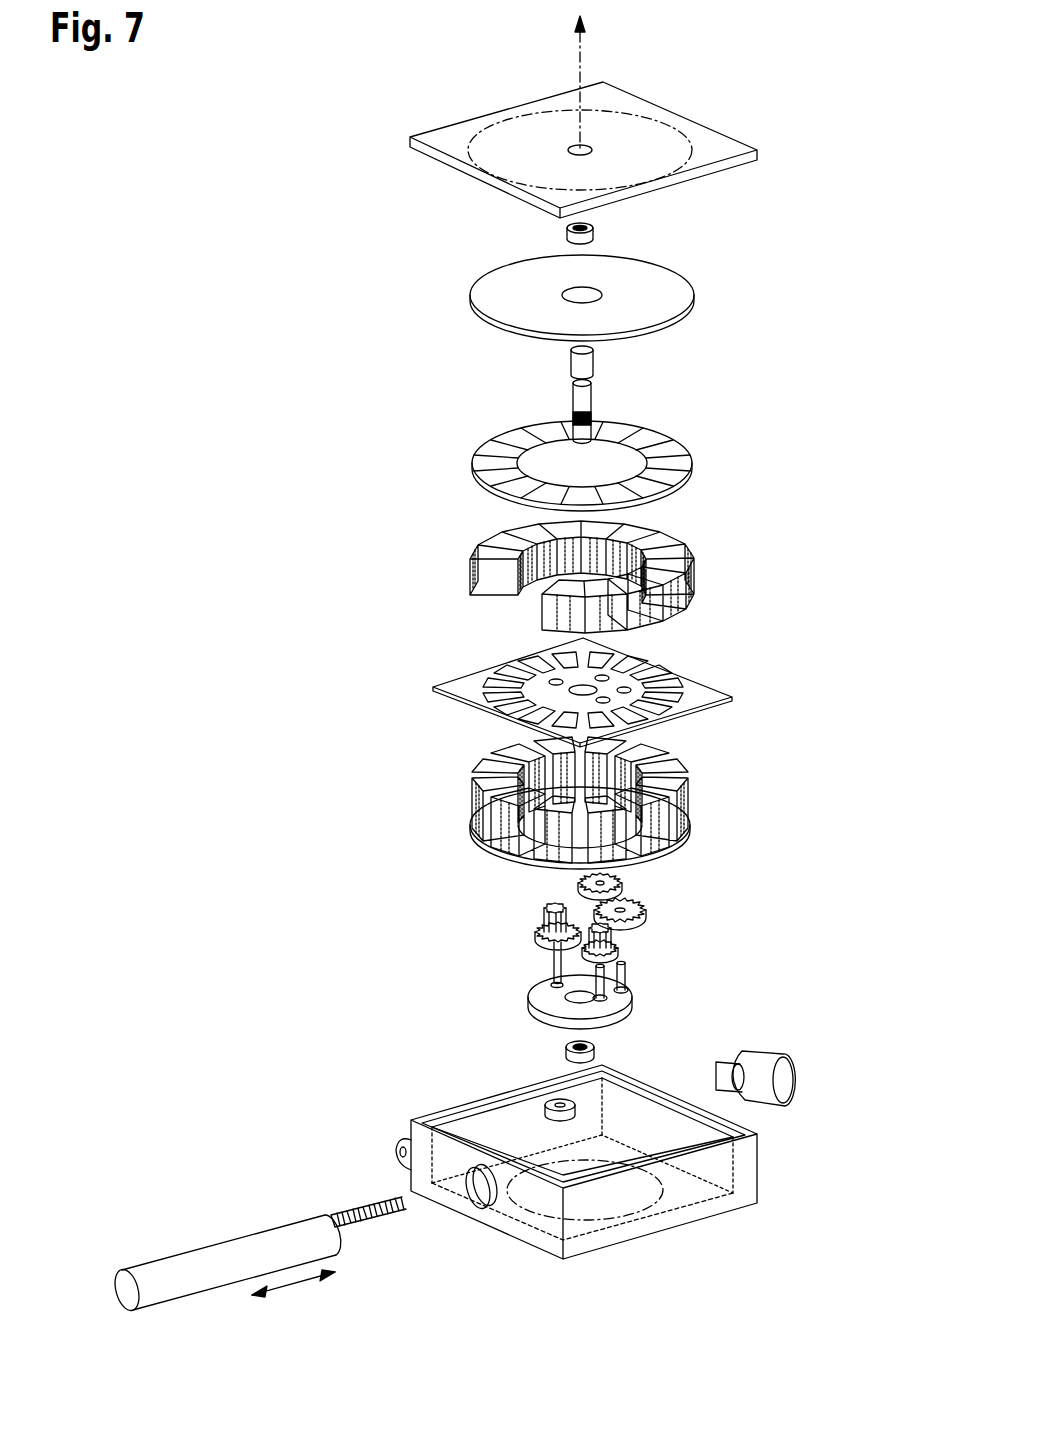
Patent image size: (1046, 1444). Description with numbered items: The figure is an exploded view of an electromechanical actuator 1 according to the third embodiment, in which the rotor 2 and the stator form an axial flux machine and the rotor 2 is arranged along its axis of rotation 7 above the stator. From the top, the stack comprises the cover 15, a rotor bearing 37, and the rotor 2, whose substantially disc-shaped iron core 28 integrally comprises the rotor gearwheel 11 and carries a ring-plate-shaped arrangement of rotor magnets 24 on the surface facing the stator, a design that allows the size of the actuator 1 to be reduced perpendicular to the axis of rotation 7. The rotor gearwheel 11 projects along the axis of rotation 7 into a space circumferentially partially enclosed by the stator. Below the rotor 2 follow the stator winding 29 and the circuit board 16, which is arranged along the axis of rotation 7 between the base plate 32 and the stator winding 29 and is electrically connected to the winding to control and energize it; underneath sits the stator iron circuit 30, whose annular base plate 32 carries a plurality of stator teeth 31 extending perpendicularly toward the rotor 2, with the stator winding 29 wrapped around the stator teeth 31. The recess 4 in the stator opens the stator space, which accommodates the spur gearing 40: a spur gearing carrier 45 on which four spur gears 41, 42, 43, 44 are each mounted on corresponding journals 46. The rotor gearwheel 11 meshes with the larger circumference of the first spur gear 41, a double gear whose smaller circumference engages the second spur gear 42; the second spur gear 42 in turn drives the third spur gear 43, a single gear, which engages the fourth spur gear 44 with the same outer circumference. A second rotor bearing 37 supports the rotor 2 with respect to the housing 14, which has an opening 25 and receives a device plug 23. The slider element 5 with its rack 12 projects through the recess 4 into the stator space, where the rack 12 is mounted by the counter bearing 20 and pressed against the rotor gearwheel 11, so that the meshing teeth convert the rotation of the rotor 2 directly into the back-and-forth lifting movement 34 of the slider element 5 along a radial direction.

The electromechanical actuator 1 is at (320, 98).
The rotor 2 is at (793, 273).
The recess 4 is at (503, 608).
The slider element 5 is at (185, 1252).
The axis of rotation 7 is at (583, 42).
The rotor gearwheel 11 is at (574, 400).
The rack 12 is at (375, 1208).
The housing 14 is at (718, 1215).
The cover 15 is at (716, 132).
The circuit board 16 is at (708, 679).
The counter bearing 20 is at (570, 360).
The device plug 23 is at (780, 1054).
The rotor magnets 24 is at (690, 444).
The opening 25 is at (470, 1195).
The iron core 28 is at (690, 295).
The stator winding 29 is at (692, 556).
The stator iron circuit 30 is at (812, 775).
The stator teeth 31 is at (692, 800).
The base plate 32 is at (688, 832).
The lifting movement 34 is at (288, 1287).
The rotor bearings 37 is at (598, 230).
The spur gearing 40 is at (743, 862).
The first spur gear 41 is at (535, 932).
The second spur gear 42 is at (647, 910).
The third spur gear 43 is at (625, 883).
The fourth spur gear 44 is at (622, 949).
The spur gearing carrier 45 is at (625, 1010).
The journals 46 is at (633, 973).